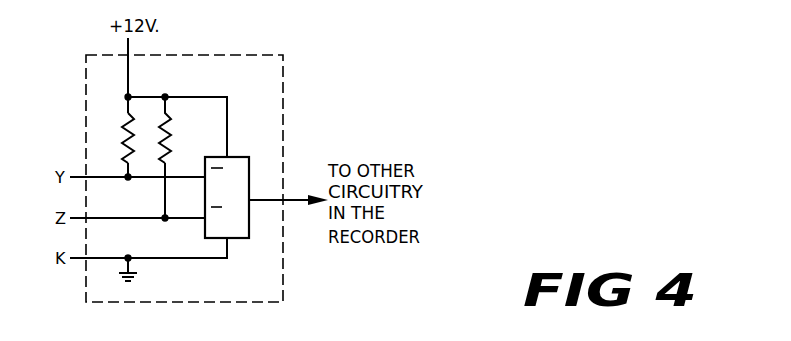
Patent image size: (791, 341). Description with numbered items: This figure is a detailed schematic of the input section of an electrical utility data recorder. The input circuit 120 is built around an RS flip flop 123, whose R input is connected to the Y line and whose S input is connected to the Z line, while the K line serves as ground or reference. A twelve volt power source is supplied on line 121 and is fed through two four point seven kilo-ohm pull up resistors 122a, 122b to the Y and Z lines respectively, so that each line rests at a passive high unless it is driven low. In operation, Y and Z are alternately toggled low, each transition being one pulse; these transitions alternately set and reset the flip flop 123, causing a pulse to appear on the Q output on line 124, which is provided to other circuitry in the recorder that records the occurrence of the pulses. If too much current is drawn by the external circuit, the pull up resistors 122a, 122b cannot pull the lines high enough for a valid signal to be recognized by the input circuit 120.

The input circuit 120 is at (284, 90).
The line 121 is at (128, 104).
The pull up resistor 122a is at (123, 159).
The pull up resistor 122b is at (175, 154).
The RS flip flop 123 is at (256, 145).
The line 124 is at (253, 202).